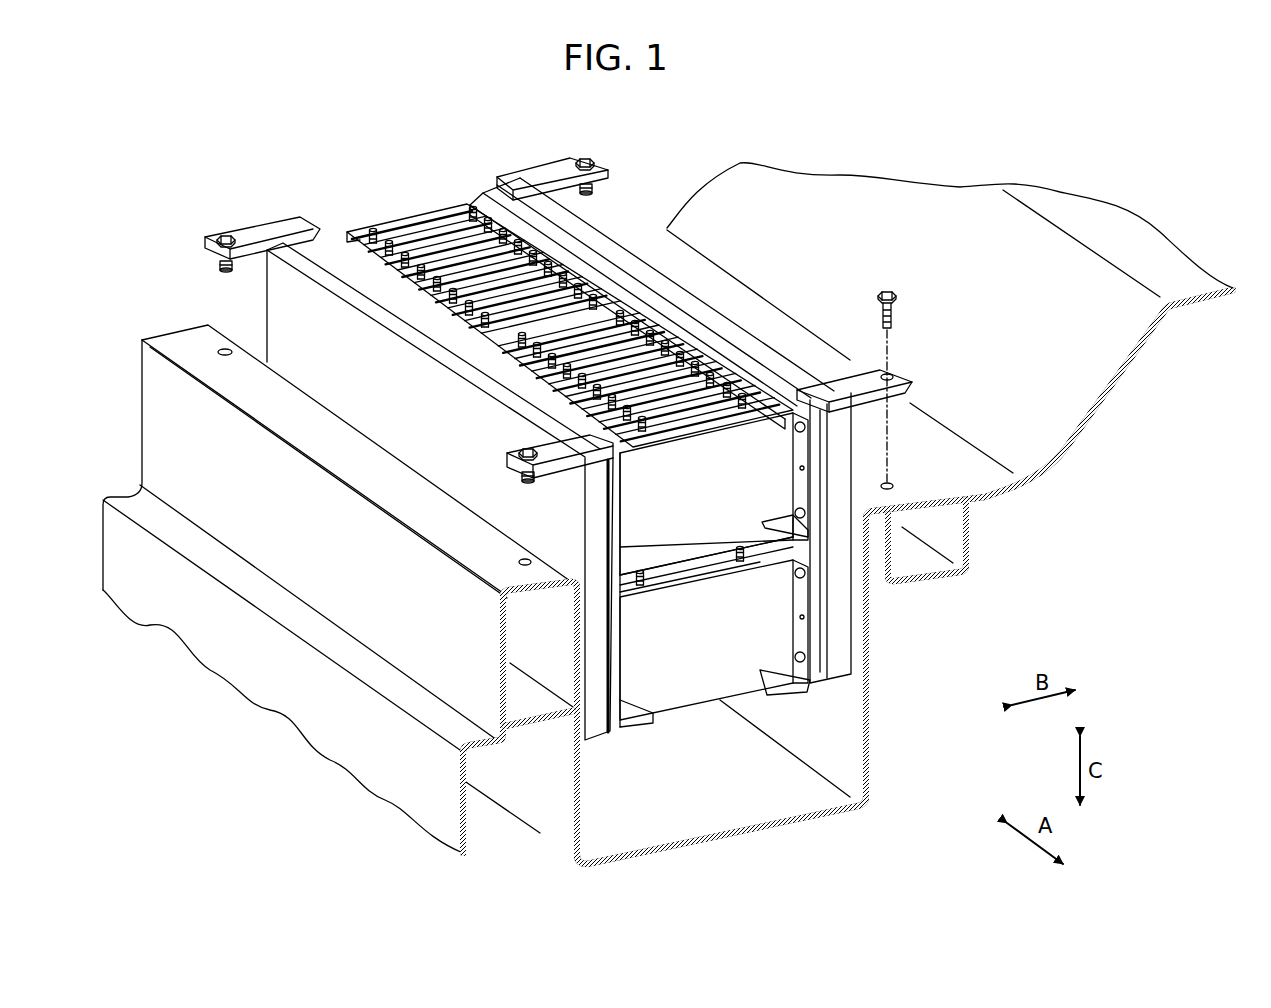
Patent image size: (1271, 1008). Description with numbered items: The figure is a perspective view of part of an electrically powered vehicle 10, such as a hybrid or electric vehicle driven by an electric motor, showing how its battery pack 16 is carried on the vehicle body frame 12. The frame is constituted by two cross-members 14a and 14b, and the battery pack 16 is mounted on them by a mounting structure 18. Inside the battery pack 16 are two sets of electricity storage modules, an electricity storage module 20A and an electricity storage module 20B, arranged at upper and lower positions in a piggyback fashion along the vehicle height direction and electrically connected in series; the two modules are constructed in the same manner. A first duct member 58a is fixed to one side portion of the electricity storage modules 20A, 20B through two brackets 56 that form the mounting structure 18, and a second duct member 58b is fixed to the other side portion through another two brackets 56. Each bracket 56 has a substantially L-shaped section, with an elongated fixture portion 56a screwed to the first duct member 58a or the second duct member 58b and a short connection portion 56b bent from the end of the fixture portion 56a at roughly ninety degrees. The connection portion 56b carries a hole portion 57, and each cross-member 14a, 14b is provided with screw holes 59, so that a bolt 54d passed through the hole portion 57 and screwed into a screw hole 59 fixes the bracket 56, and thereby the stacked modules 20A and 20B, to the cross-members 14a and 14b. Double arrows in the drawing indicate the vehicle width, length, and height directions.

The electrically powered vehicle 10 is at (702, 108).
The vehicle body frame 12 is at (177, 282).
The cross-member 14a is at (539, 702).
The cross-member 14b is at (922, 570).
The battery pack 16 is at (745, 310).
The mounting structure 18 is at (277, 212).
The electricity storage module 20A is at (692, 530).
The electricity storage module 20B is at (688, 662).
The bolt 54d is at (888, 292).
The bracket 56 is at (505, 450).
The fixture portion 56a is at (620, 500).
The connection portion 56b is at (557, 468).
The hole portion 57 is at (893, 375).
The first duct member 58a is at (853, 430).
The second duct member 58b is at (287, 318).
The screw hole 59 is at (226, 358).